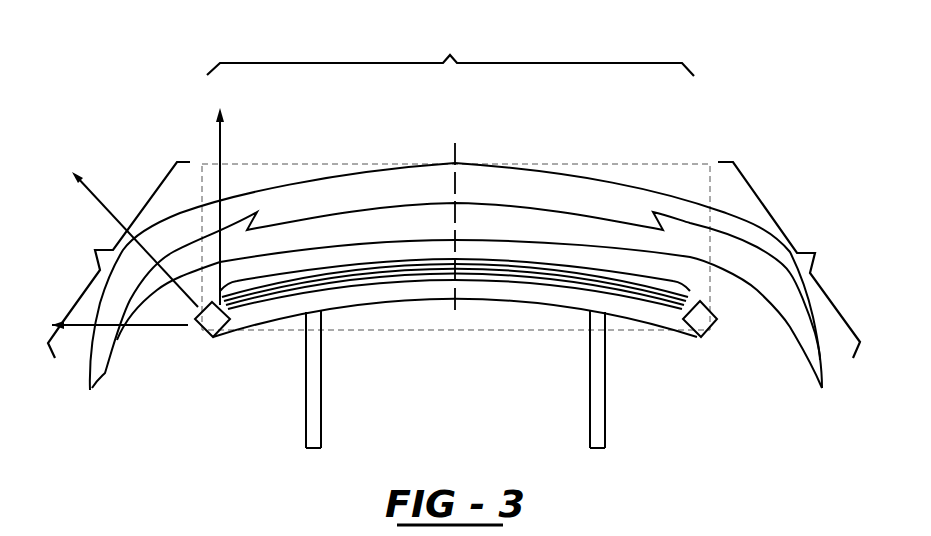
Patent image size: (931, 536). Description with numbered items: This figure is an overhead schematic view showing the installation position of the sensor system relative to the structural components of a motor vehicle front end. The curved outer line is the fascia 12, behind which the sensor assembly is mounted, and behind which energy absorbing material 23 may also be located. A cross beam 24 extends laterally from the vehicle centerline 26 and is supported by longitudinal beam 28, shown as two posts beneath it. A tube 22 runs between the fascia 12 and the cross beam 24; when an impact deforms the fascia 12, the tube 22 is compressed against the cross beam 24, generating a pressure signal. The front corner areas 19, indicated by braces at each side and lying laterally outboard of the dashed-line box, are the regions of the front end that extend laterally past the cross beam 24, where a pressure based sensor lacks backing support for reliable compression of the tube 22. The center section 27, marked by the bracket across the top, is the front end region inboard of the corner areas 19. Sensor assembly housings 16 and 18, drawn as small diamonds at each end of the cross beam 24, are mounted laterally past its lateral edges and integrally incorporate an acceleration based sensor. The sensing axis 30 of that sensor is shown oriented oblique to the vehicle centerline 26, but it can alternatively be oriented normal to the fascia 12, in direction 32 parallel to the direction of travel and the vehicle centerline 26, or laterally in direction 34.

The fascia 12 is at (584, 166).
The sensor assembly housing 16 is at (203, 340).
The sensor assembly housing 18 is at (703, 338).
The front corner area 19 is at (454, 260).
The tube 22 is at (563, 273).
The energy absorbing material 23 is at (290, 273).
The cross beam 24 is at (367, 313).
The vehicle centerline 26 is at (455, 317).
The center section 27 is at (450, 52).
The longitudinal beam 28 is at (307, 412).
The sensing axis 30 is at (88, 188).
The direction 32 is at (221, 143).
The direction 34 is at (163, 328).